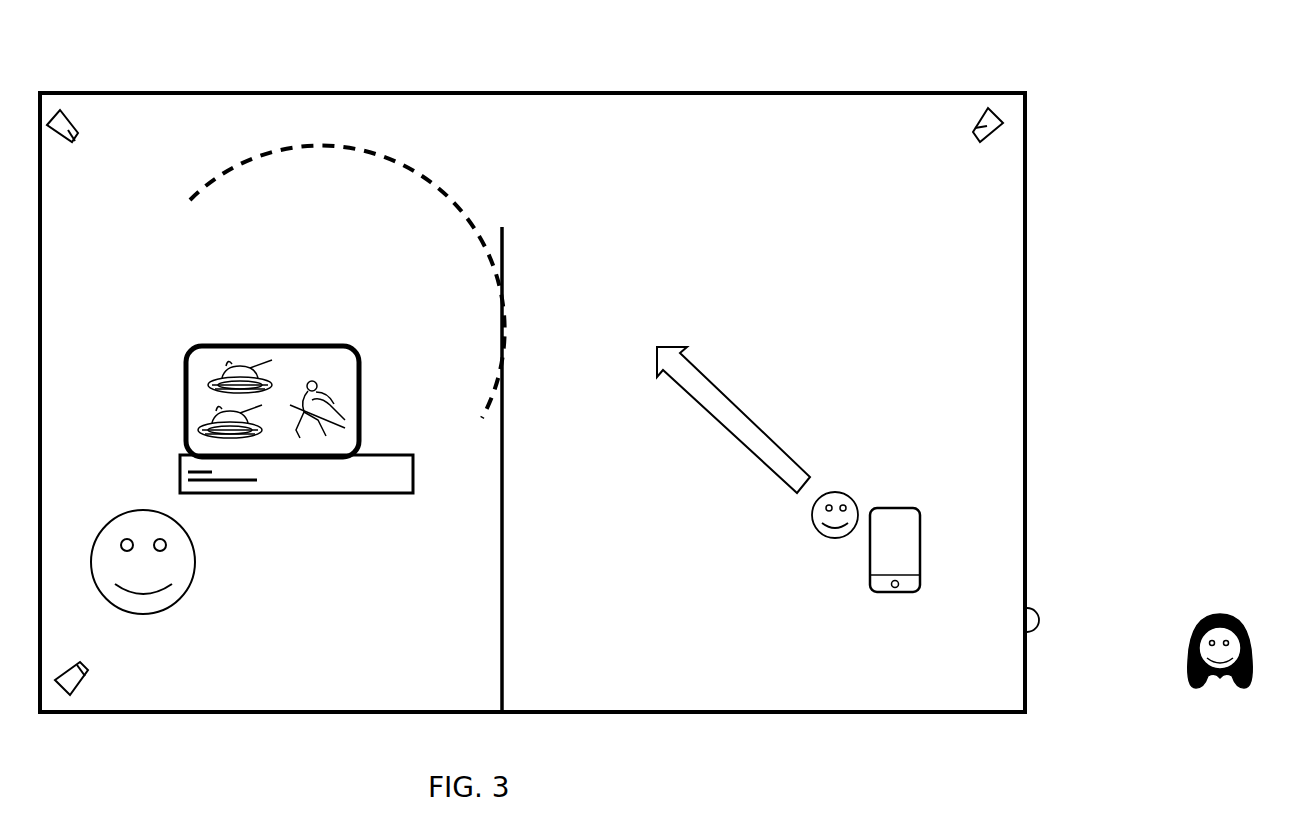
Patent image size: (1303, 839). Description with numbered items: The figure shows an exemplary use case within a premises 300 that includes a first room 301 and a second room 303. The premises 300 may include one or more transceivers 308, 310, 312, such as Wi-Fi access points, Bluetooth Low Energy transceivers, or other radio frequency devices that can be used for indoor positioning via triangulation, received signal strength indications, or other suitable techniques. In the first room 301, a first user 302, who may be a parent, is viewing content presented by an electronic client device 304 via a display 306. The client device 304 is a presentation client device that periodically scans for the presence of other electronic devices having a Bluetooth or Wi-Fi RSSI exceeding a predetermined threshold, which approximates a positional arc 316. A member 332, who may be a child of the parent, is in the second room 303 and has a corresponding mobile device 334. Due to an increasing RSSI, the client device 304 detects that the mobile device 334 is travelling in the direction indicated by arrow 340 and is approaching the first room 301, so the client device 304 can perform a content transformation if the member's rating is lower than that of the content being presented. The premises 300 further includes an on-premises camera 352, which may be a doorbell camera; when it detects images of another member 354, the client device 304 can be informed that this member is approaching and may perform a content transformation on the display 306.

The premises 300 is at (988, 58).
The first room 301 is at (334, 642).
The second room 303 is at (667, 642).
The first user 302 is at (143, 512).
The electronic client device 304 is at (378, 458).
The display 306 is at (200, 345).
The transceiver 308 is at (80, 662).
The transceiver 310 is at (72, 142).
The transceiver 312 is at (975, 128).
The positional arc 316 is at (375, 172).
The member 332 is at (842, 492).
The mobile device 334 is at (895, 508).
The arrow 340 is at (718, 396).
The on-premises camera 352 is at (1040, 608).
The member 354 is at (1228, 613).